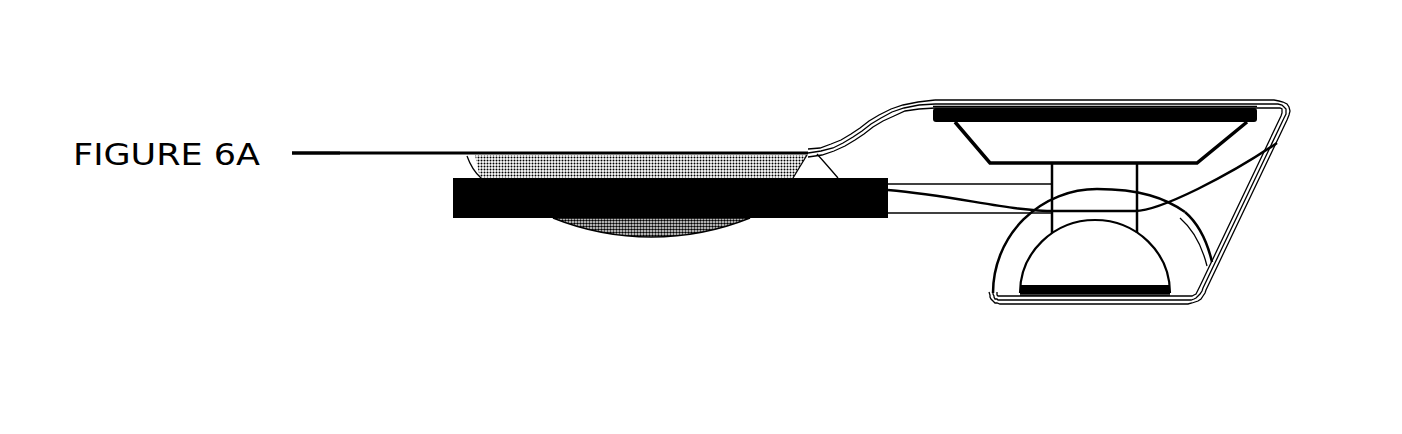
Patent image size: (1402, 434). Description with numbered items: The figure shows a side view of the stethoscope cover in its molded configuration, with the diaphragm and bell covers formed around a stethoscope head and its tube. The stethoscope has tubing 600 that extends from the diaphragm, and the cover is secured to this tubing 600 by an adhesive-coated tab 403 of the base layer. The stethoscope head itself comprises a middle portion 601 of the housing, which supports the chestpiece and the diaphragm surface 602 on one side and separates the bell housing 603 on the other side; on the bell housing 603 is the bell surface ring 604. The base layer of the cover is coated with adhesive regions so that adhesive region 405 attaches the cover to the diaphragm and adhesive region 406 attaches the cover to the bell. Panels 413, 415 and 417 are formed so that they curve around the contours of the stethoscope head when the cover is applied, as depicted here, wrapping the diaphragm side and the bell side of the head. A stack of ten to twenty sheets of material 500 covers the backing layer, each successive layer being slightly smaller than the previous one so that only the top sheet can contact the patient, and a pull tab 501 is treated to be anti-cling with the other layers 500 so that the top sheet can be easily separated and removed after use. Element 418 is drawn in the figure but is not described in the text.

The sheets of material 500 is at (557, 146).
The pull tab 501 is at (312, 140).
The panel 413 is at (900, 141).
The outer housing wall 418 is at (1260, 200).
The adhesive region 405 is at (1037, 101).
The diaphragm surface 602 is at (1102, 100).
The middle portion 601 is at (1164, 133).
The stethoscope tubing 600 is at (476, 225).
The tab 403 is at (696, 238).
The panel 417 is at (985, 282).
The panel 415 is at (1198, 245).
The bell housing 603 is at (1033, 277).
The adhesive region 406 is at (1039, 303).
The bell surface ring 604 is at (1150, 302).